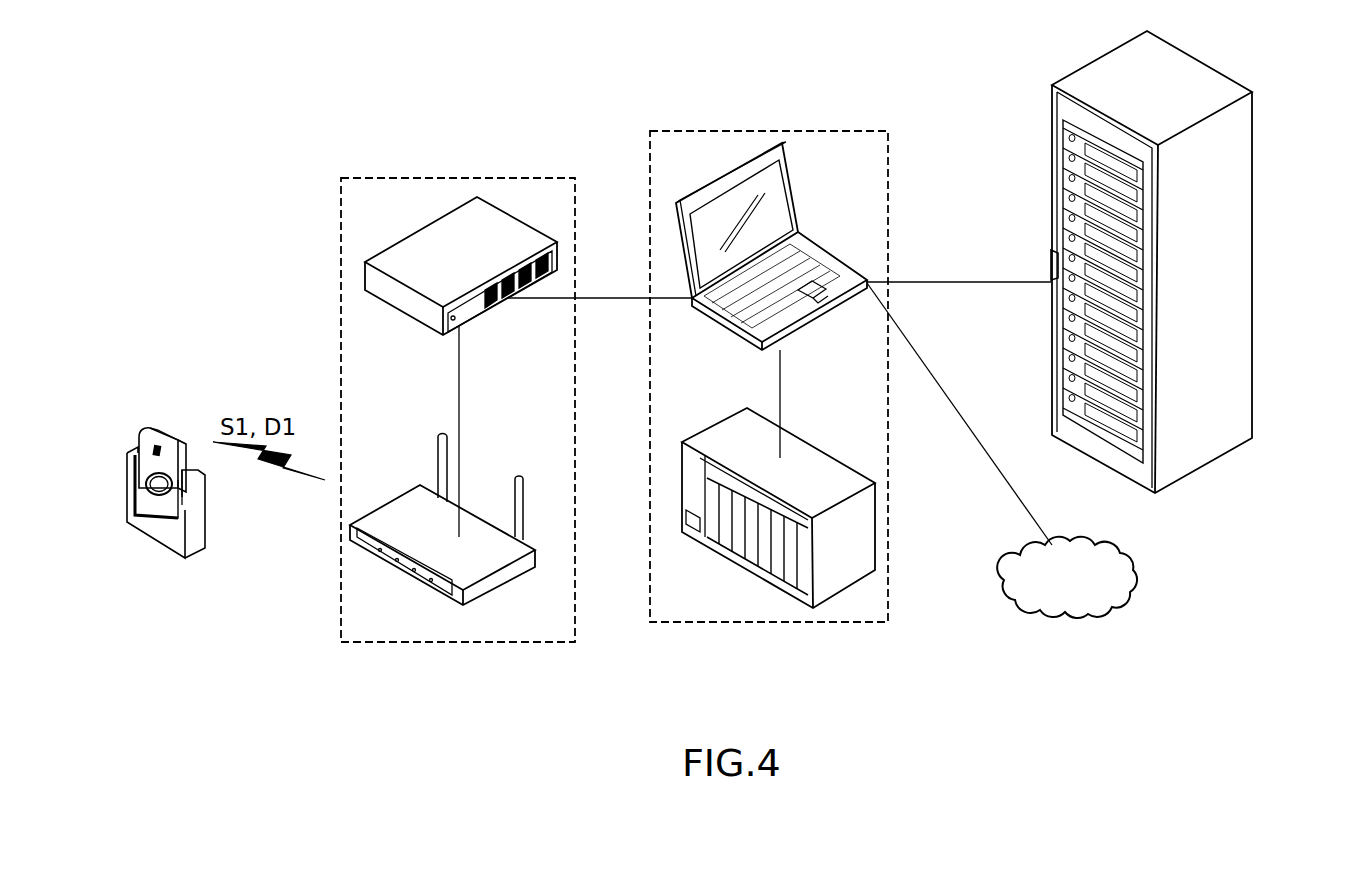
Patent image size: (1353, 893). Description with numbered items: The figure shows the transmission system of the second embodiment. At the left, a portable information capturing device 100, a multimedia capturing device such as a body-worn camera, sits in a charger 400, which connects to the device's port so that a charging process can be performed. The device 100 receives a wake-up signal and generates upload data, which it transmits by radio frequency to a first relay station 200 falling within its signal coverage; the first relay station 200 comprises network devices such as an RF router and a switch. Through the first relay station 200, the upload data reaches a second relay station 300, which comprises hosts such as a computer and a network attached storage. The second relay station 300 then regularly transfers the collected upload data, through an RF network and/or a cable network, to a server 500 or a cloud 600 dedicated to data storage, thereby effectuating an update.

The portable information capturing device 100 is at (187, 444).
The charger 400 is at (127, 470).
The first relay station 200 is at (355, 178).
The second relay station 300 is at (665, 131).
The server 500 is at (1230, 397).
The cloud 600 is at (1123, 553).